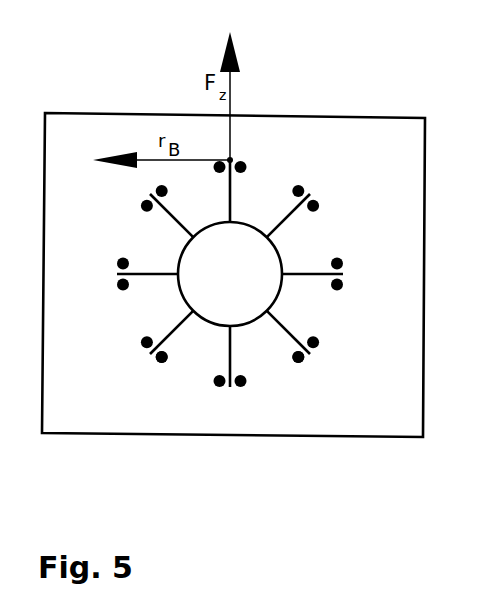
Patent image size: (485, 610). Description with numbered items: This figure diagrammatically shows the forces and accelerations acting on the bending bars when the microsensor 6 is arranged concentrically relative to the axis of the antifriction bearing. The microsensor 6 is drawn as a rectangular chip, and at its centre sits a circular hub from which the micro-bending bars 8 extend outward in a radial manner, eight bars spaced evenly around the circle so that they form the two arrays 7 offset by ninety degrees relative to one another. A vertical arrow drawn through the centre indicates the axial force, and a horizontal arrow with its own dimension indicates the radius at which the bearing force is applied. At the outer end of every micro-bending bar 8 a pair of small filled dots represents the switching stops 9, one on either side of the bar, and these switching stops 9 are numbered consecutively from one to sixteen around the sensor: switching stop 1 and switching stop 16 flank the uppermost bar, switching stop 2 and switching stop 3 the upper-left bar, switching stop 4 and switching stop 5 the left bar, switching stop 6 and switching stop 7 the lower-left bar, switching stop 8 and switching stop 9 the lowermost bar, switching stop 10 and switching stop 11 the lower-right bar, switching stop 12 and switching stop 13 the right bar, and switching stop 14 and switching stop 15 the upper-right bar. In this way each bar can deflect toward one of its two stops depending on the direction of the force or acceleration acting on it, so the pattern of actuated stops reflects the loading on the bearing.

The first switching stop 1 is at (220, 154).
The second switching stop 2 is at (152, 181).
The third switching stop 3 is at (136, 198).
The fourth switching stop 4 is at (110, 258).
The fifth switching stop 5 is at (110, 291).
The microsensor 6 is at (127, 487).
The array 7 is at (152, 370).
The micro-bending bar 8 is at (296, 441).
The switching stop 9 is at (158, 360).
The tenth switching stop 10 is at (309, 368).
The eleventh switching stop 11 is at (327, 350).
The twelfth switching stop 12 is at (353, 293).
The thirteenth switching stop 13 is at (353, 263).
The fourteenth switching stop 14 is at (328, 207).
The fifteenth switching stop 15 is at (313, 183).
The sixteenth switching stop 16 is at (247, 154).